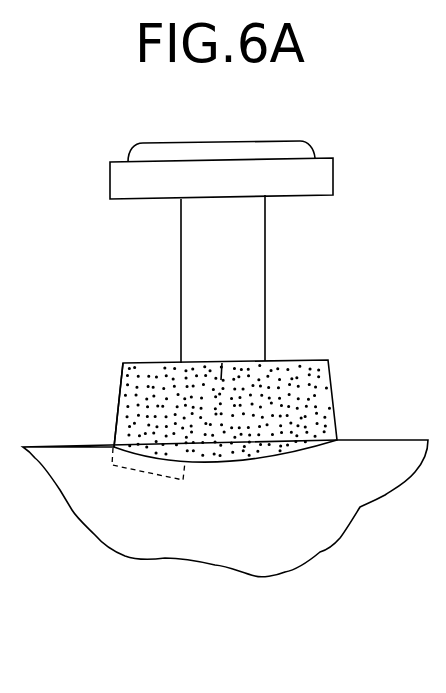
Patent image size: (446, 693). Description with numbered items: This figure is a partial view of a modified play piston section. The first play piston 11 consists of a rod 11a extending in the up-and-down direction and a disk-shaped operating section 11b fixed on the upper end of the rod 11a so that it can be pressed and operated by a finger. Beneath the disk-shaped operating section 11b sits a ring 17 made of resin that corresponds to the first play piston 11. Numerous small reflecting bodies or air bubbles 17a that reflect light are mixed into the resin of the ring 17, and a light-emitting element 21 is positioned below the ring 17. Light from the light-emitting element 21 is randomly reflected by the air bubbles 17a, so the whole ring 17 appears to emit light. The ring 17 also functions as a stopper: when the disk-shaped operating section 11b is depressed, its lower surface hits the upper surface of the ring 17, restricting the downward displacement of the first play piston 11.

The first play piston 11 is at (224, 236).
The rod 11a is at (266, 256).
The disk-shaped operating section 11b is at (222, 142).
The ring 17 is at (330, 378).
The air bubbles 17a is at (222, 363).
The light-emitting element 21 is at (147, 475).